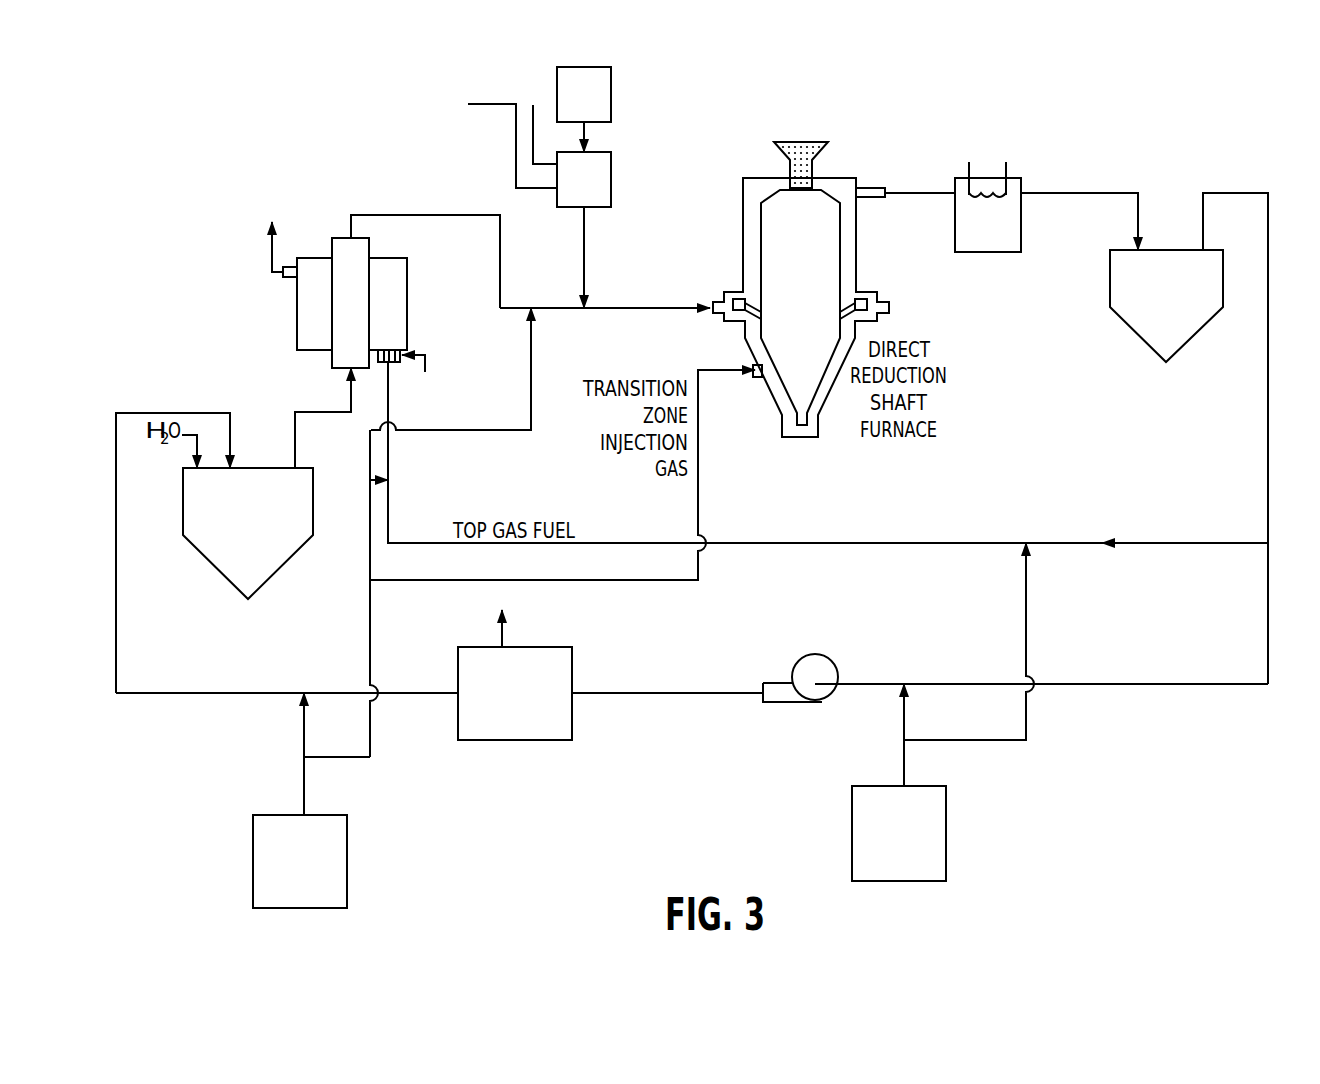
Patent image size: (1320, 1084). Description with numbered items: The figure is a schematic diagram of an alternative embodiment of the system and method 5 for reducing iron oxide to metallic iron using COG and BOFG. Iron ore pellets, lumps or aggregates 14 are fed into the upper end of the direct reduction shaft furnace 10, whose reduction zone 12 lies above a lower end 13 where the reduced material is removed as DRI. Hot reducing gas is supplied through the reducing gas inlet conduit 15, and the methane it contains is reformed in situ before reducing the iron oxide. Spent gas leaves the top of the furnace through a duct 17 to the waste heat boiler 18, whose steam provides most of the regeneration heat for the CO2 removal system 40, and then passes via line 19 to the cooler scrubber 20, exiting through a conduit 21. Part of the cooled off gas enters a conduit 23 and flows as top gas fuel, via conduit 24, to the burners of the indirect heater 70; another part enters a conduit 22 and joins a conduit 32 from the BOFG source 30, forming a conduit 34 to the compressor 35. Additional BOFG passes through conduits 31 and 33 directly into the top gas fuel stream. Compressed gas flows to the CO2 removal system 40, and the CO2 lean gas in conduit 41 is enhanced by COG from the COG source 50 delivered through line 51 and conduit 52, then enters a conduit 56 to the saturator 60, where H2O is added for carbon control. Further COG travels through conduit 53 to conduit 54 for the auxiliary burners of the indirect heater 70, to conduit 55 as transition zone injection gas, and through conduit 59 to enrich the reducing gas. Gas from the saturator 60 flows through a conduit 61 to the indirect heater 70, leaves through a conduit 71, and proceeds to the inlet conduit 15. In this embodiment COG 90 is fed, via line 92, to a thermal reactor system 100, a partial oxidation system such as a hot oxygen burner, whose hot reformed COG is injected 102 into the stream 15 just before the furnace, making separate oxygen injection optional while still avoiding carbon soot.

The system and method 5 is at (712, 130).
The direct reduction shaft furnace 10 is at (858, 242).
The reduction zone 12 is at (851, 166).
The lower end 13 is at (836, 452).
The iron ore pellets, lumps, aggregates 14 is at (817, 133).
The reducing gas inlet conduit 15 is at (660, 310).
The duct 17 is at (900, 190).
The waste heat boiler 18 is at (1023, 188).
The top gas line to cooler scrubber 19 is at (1120, 192).
The cooler scrubber 20 is at (1124, 323).
The conduit 21 is at (1268, 380).
The conduit 22 is at (1268, 593).
The conduit 23 is at (1172, 542).
The conduit 24 is at (890, 542).
The BOFG source 30 is at (948, 815).
The conduit 31 is at (906, 767).
The conduit 32 is at (906, 725).
The conduit 33 is at (1028, 725).
The conduit 34 is at (882, 685).
The compressor 35 is at (830, 661).
The CO2 removal system 40 is at (456, 741).
The conduit 41 is at (400, 693).
The COG source 50 is at (349, 843).
The COG line 51 is at (306, 793).
The conduit 52 is at (306, 735).
The conduit 53 is at (370, 612).
The conduit 54 is at (370, 528).
The conduit 55 is at (565, 580).
The conduit 56 is at (117, 637).
The conduit 59 is at (447, 430).
The saturator 60 is at (232, 580).
The conduit 61 is at (338, 412).
The indirect heater 70 is at (297, 350).
The conduit 71 is at (460, 217).
The COG 90 is at (613, 93).
The COG line to partial oxidation unit 92 is at (588, 137).
The thermal reactor system 100 is at (613, 177).
The injection 102 is at (582, 237).